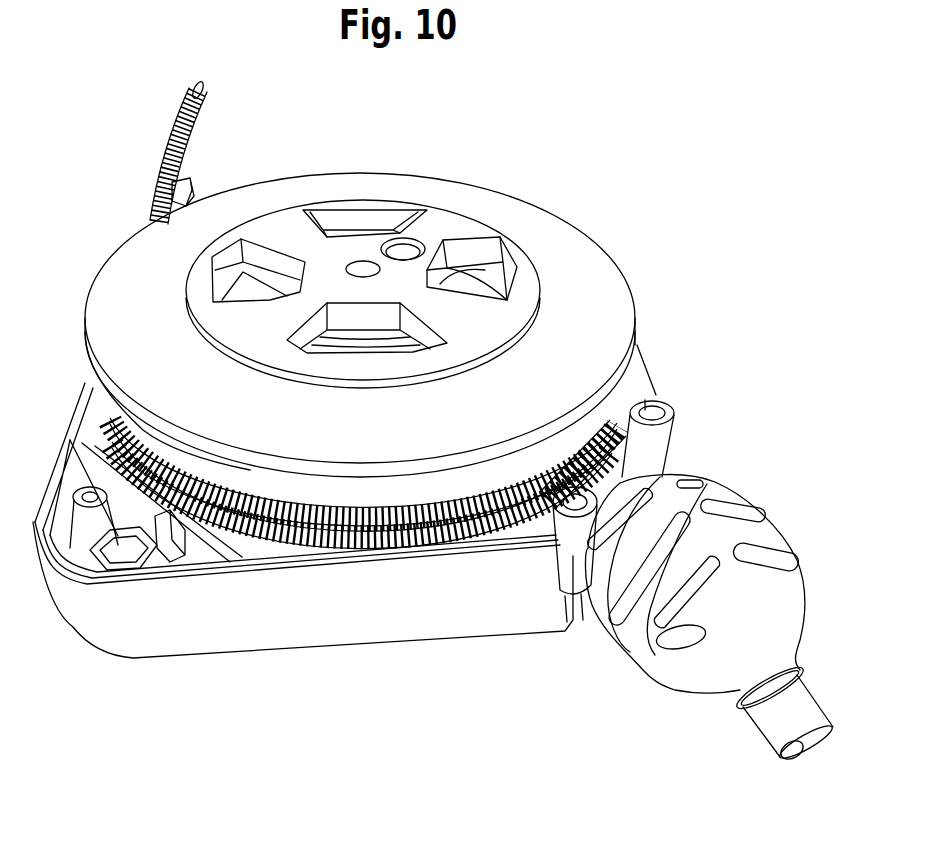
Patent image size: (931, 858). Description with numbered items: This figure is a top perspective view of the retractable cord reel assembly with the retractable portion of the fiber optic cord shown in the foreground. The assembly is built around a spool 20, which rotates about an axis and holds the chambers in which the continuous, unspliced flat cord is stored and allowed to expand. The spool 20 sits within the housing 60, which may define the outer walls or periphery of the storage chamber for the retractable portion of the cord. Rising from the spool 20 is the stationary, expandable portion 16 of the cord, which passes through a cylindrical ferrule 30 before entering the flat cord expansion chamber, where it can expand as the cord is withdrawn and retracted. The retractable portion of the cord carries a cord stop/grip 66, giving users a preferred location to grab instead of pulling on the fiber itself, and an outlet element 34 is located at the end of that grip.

The stationary, expandable portion 16 is at (170, 133).
The spool 20 is at (362, 258).
The cylindrical ferrule 30 is at (420, 240).
The nozzle 34 is at (762, 728).
The housing 60 is at (247, 655).
The cord stop/grip 66 is at (700, 693).